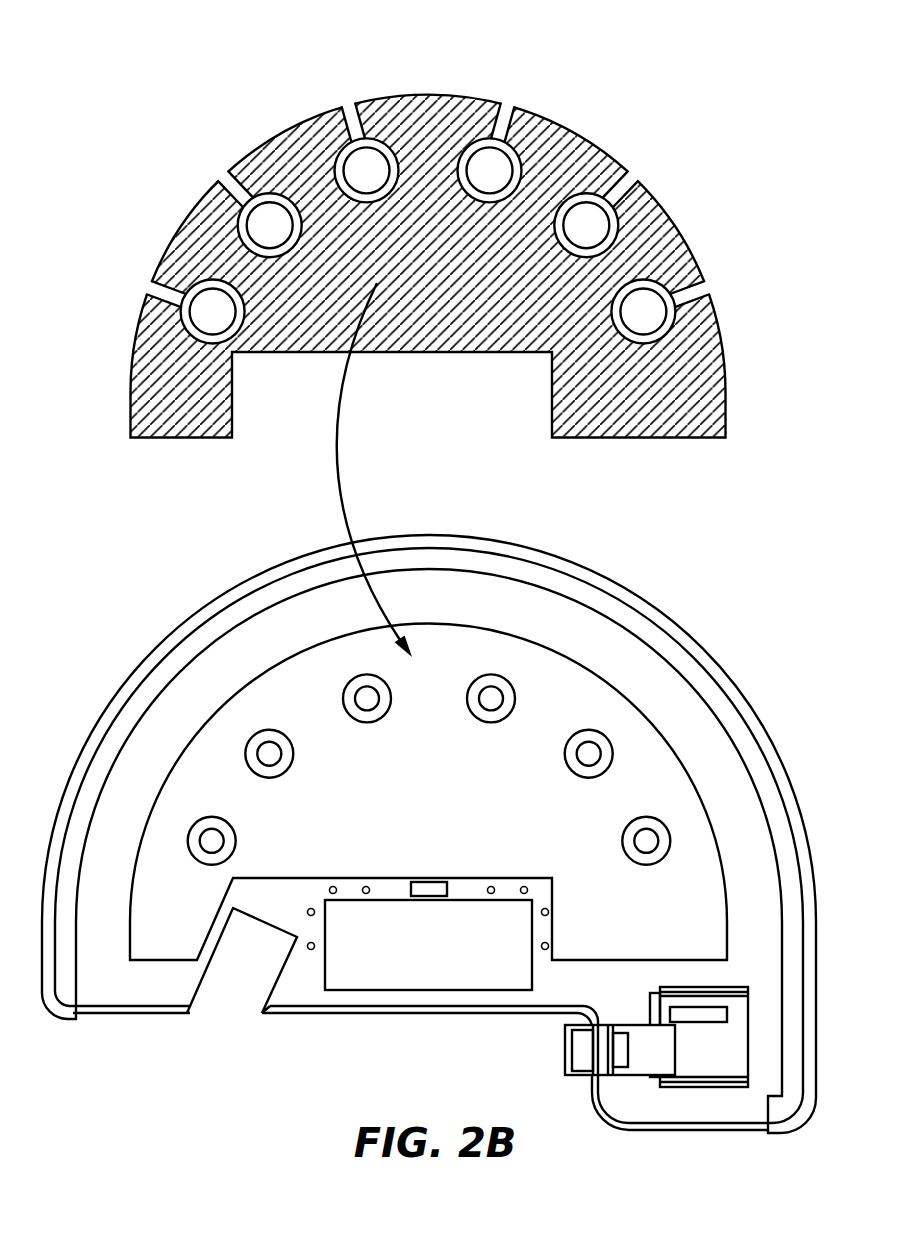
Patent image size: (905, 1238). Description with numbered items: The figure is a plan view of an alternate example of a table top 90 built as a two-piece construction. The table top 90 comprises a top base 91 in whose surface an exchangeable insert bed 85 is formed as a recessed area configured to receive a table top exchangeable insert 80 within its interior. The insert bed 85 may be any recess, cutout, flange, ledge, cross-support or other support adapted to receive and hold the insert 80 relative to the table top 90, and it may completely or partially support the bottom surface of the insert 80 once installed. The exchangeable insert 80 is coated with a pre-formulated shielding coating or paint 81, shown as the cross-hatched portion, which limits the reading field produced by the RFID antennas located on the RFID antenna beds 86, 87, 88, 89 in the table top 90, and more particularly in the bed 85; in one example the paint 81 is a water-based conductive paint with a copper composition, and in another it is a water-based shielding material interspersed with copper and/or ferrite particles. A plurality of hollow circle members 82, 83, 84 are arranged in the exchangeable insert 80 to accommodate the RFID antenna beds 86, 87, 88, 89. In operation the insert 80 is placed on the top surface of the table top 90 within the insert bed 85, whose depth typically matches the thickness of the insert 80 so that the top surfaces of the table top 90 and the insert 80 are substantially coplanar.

The table top exchangeable insert 80 is at (404, 418).
The pre-formulated shielding coating or paint 81 is at (718, 394).
The hollow circle member 82 is at (277, 218).
The hollow circle member 83 is at (208, 320).
The hollow circle member 84 is at (360, 132).
The exchangeable insert bed 85 is at (615, 937).
The RFID antenna bed 86 is at (645, 840).
The RFID antenna bed 87 is at (588, 752).
The RFID antenna bed 88 is at (473, 697).
The RFID antenna bed 89 is at (390, 710).
The table top 90 is at (161, 588).
The top base 91 is at (305, 573).